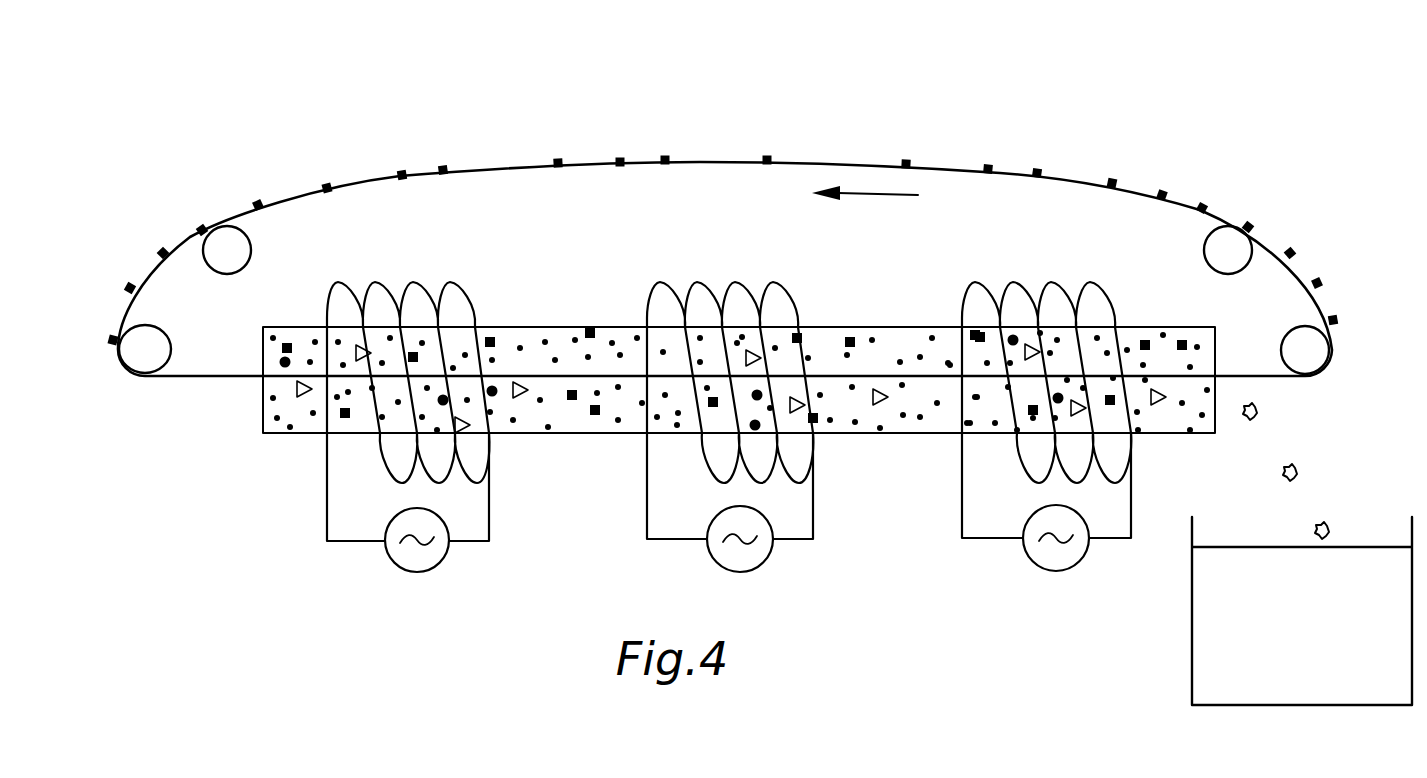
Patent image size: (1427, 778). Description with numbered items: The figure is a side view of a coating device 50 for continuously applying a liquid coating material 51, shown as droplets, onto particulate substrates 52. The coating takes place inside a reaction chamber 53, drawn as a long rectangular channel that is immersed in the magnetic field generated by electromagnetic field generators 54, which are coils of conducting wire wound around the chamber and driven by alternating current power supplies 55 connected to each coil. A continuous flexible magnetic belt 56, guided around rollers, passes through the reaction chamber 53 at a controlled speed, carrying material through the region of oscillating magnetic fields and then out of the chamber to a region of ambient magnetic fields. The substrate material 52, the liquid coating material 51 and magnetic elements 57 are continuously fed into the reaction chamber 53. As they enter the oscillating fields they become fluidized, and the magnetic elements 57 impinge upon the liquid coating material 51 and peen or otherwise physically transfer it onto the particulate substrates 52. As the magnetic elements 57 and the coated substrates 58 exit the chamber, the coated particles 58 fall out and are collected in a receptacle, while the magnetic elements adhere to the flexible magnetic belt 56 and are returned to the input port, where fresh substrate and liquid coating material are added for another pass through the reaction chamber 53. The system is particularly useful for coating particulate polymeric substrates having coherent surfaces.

The device 50 is at (1066, 104).
The liquid coating material 51 is at (279, 418).
The particulate substrate 52 is at (304, 398).
The reaction chamber 53 is at (291, 327).
The electromagnetic field generator 54 is at (392, 468).
The alternating current power supply 55 is at (445, 565).
The flexible magnetic belt 56 is at (218, 378).
The magnetic elements 57 is at (596, 418).
The coated substrates 58 is at (1293, 466).